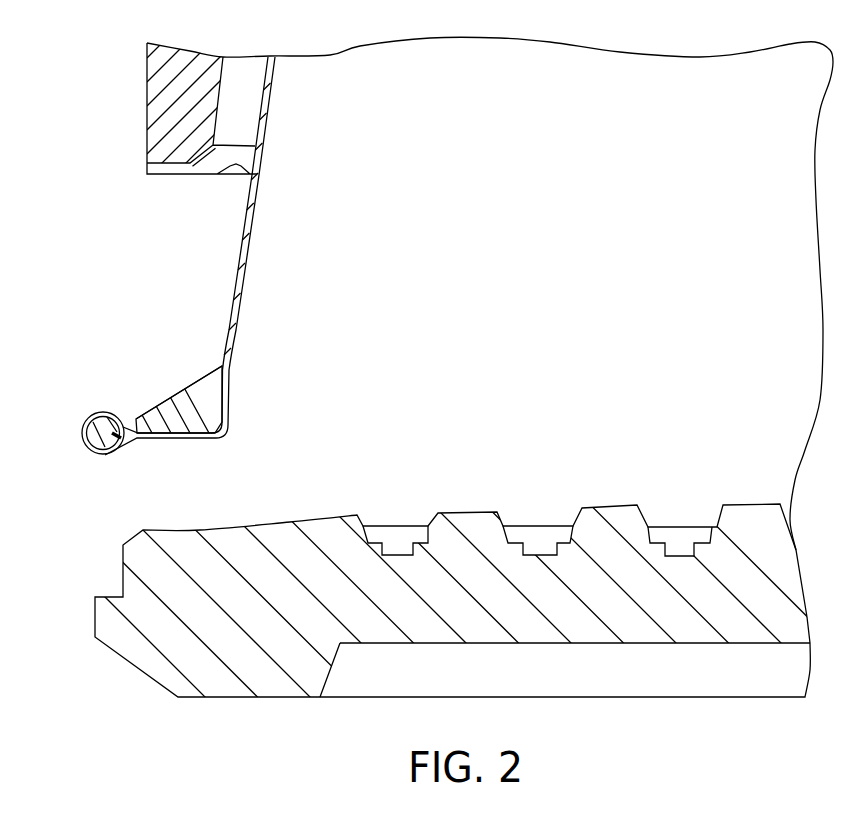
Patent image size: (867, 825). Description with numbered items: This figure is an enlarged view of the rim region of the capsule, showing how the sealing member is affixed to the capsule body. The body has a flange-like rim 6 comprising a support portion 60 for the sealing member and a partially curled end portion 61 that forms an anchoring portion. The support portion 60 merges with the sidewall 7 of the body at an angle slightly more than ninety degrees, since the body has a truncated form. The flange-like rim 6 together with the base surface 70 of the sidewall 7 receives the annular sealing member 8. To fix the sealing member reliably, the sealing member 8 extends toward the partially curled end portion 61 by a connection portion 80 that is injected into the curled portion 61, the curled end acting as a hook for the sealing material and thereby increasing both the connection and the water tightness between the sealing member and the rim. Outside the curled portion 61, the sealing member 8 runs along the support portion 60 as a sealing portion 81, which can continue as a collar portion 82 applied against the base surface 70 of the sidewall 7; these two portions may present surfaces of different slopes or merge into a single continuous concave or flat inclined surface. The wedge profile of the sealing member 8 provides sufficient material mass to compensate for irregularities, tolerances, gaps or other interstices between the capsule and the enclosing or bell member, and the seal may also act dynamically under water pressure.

The flange-like rim 6 is at (142, 432).
The sidewall 7 is at (245, 285).
The annular sealing member 8 is at (167, 377).
The support portion 60 is at (183, 437).
The partially curled end portion 61 is at (82, 432).
The base surface 70 is at (233, 370).
The connection portion 80 is at (104, 404).
The sealing portion 81 is at (187, 410).
The collar portion 82 is at (221, 368).